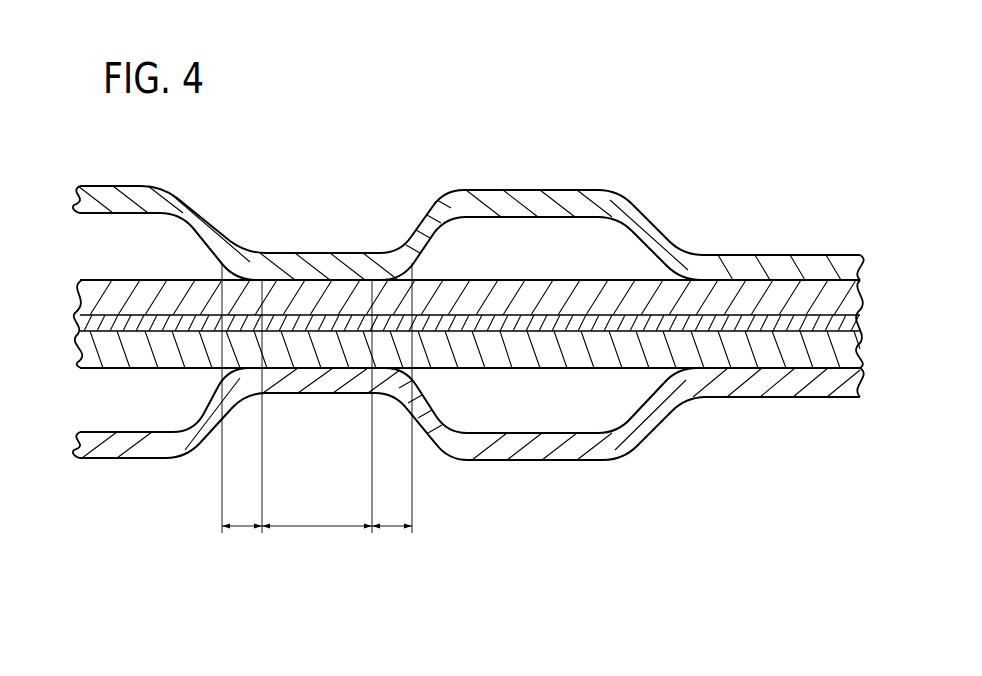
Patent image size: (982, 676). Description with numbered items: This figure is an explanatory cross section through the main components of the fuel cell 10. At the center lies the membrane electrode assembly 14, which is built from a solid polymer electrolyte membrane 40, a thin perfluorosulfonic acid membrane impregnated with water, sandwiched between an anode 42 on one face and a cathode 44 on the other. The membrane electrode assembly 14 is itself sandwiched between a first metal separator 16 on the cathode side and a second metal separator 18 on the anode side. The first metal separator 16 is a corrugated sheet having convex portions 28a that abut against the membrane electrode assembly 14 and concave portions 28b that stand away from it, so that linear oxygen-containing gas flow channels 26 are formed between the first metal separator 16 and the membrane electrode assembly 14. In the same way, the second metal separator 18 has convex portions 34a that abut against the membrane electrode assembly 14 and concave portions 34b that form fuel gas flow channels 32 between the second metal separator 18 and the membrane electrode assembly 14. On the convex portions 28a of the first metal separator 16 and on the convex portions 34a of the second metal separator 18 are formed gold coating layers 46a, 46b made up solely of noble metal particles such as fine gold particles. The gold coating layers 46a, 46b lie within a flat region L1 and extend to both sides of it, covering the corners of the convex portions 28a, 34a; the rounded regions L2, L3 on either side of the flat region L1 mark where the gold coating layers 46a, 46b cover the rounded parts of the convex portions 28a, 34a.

The fuel cell 10 is at (250, 147).
The membrane electrode assembly 14 is at (935, 283).
The first metal separator 16 is at (637, 462).
The second metal separator 18 is at (640, 187).
The oxygen-containing gas flow channels 26 is at (539, 401).
The convex portions 28a is at (291, 380).
The concave portions 28b is at (552, 448).
The fuel gas flow channels 32 is at (539, 255).
The convex portions 34a is at (292, 266).
The concave portions 34b is at (513, 199).
The solid polymer electrolyte membrane 40 is at (862, 328).
The anode 42 is at (855, 301).
The cathode 44 is at (856, 355).
The gold coating layer 46a is at (343, 372).
The gold coating layer 46b is at (334, 279).
The flat region L1 is at (317, 406).
The rounded region L2 is at (242, 398).
The rounded region L3 is at (392, 398).